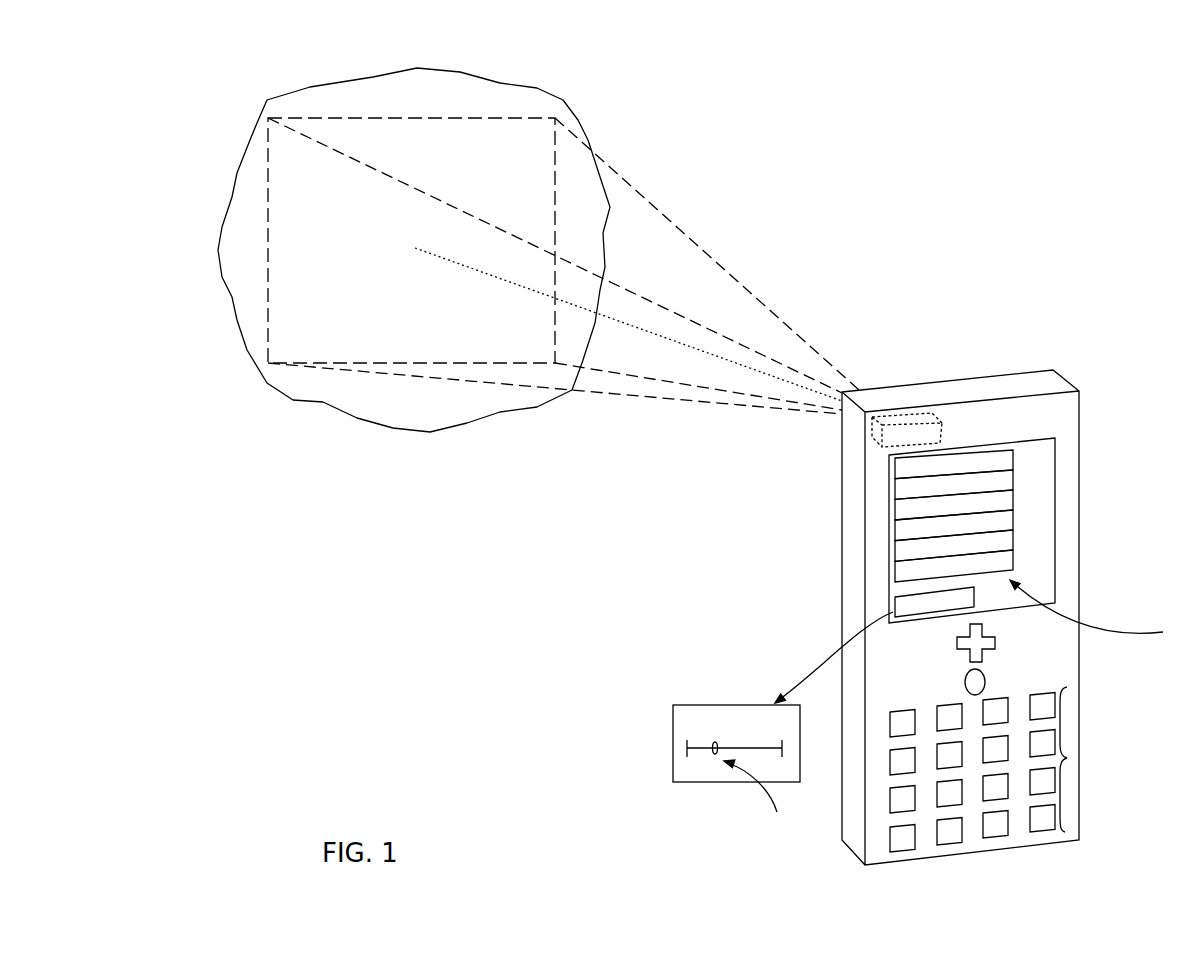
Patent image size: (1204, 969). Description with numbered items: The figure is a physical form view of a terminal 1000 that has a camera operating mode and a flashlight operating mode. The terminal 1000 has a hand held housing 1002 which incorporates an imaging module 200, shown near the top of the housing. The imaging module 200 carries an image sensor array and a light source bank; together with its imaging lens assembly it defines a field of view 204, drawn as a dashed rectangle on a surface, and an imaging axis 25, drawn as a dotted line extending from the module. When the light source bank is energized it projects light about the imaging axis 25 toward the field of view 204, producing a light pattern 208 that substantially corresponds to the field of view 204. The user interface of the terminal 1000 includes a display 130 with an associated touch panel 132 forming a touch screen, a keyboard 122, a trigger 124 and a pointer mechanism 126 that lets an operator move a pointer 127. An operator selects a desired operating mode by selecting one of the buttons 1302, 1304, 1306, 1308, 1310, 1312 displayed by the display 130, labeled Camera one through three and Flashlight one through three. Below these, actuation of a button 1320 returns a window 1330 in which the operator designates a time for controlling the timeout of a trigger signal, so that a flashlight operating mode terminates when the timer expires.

The imaging axis 25 is at (668, 340).
The keyboard 122 is at (1067, 758).
The trigger 124 is at (985, 678).
The pointer mechanism 126 is at (997, 636).
The pointer 127 is at (962, 708).
The display 130 is at (1008, 477).
The touch panel 132 is at (1042, 447).
The imaging module 200 is at (942, 430).
The field of view 204 is at (493, 363).
The light pattern 208 is at (355, 418).
The terminal 1000 is at (936, 598).
The hand held housing 1002 is at (1067, 652).
The button 1302 is at (1013, 460).
The button 1304 is at (1013, 480).
The button 1306 is at (1013, 500).
The button 1308 is at (1013, 520).
The button 1310 is at (1013, 540).
The button 1312 is at (1013, 560).
The button 1320 is at (918, 622).
The window 1330 is at (696, 782).